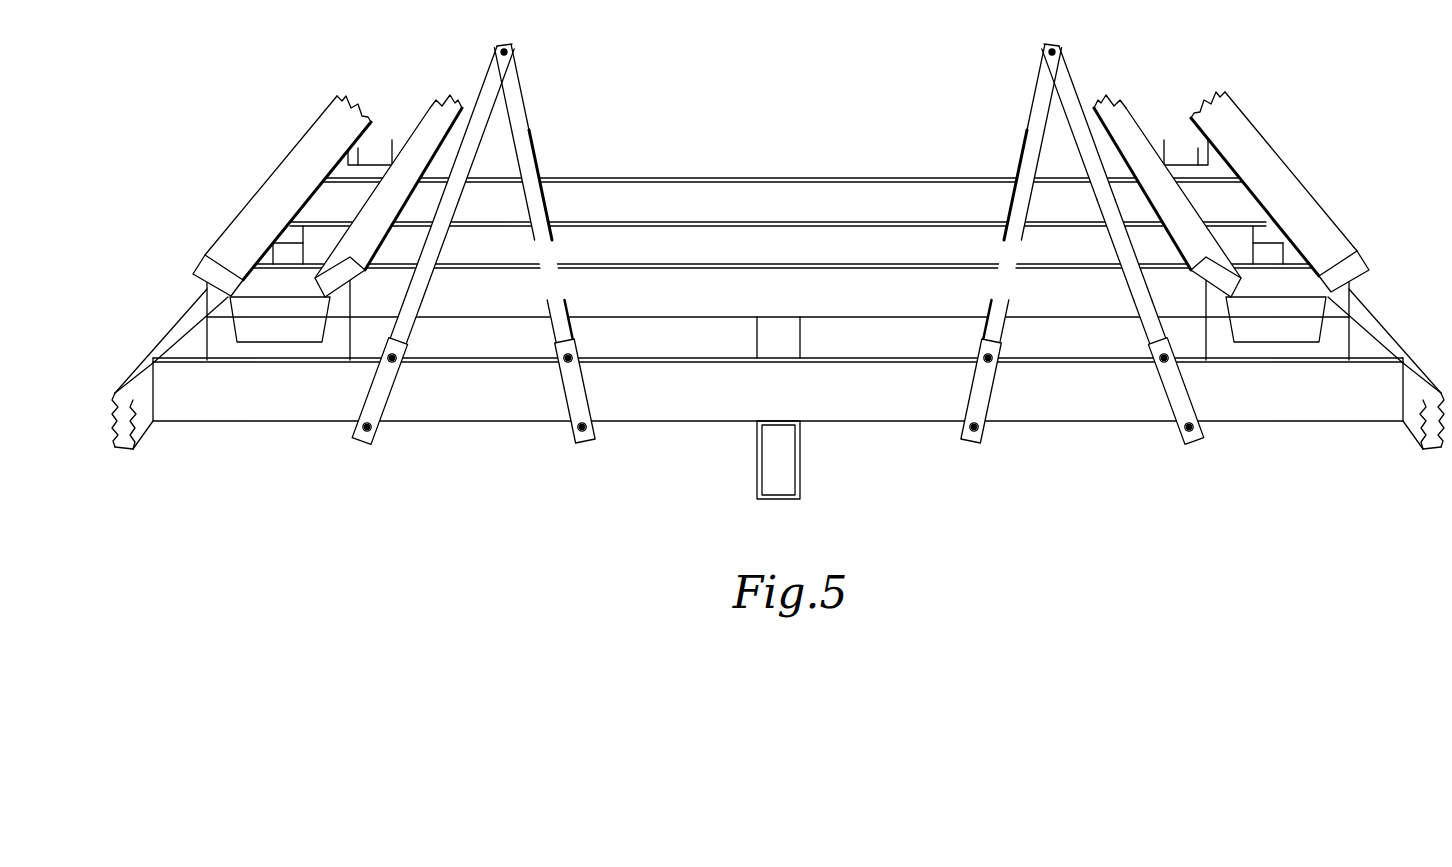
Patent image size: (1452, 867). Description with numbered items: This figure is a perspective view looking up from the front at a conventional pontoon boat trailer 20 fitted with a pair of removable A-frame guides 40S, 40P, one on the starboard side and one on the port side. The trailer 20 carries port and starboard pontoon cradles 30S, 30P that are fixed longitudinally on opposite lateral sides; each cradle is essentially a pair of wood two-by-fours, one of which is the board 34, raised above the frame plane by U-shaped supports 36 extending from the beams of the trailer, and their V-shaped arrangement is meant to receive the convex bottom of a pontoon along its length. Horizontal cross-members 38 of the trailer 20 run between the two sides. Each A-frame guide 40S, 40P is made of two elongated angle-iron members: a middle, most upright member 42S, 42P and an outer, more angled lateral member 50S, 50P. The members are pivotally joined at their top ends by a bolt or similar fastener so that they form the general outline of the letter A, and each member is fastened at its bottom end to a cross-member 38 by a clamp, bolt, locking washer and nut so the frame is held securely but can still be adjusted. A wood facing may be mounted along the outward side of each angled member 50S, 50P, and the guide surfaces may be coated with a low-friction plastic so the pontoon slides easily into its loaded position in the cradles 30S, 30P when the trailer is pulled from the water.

The pontoon boat trailer 20 is at (778, 320).
The starboard pontoon cradle 30S is at (262, 196).
The port pontoon cradle 30P is at (1306, 196).
The wood 2×4 34 is at (430, 118).
The U-shaped support 36 is at (250, 350).
The cross-member 38 is at (745, 208).
The starboard A-frame guide 40S is at (469, 248).
The port A-frame guide 40P is at (1085, 248).
The upright member 42S is at (547, 152).
The upright member 42P is at (1000, 205).
The starboard angled member 50S is at (425, 247).
The port angled member 50P is at (1128, 247).